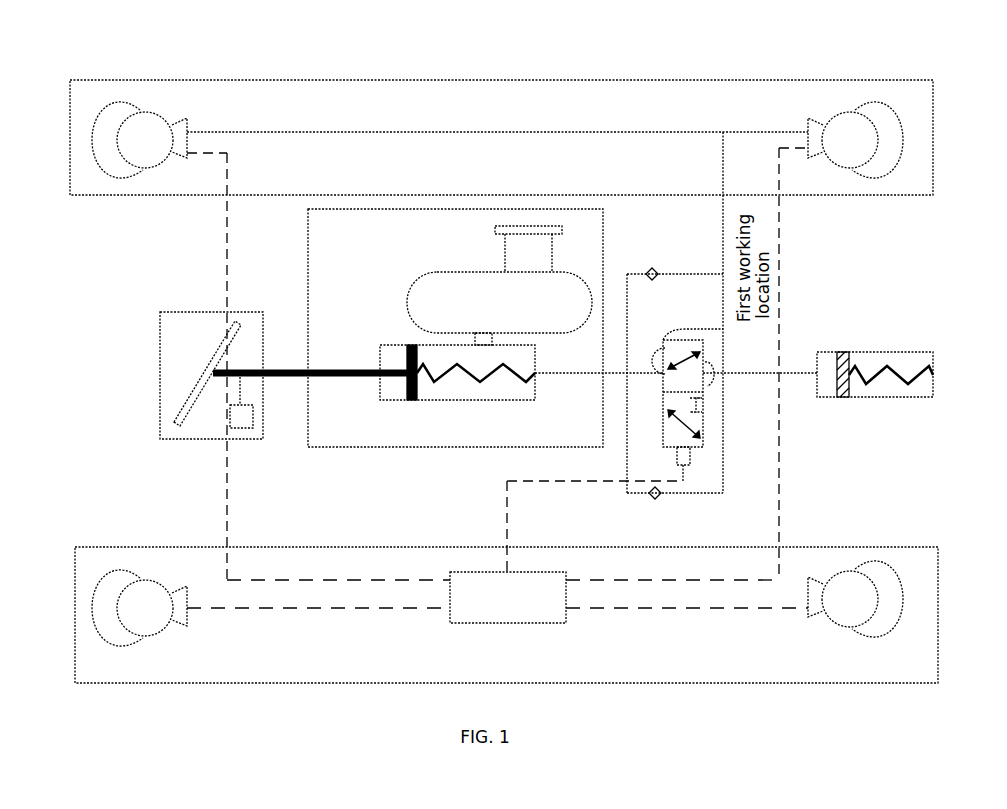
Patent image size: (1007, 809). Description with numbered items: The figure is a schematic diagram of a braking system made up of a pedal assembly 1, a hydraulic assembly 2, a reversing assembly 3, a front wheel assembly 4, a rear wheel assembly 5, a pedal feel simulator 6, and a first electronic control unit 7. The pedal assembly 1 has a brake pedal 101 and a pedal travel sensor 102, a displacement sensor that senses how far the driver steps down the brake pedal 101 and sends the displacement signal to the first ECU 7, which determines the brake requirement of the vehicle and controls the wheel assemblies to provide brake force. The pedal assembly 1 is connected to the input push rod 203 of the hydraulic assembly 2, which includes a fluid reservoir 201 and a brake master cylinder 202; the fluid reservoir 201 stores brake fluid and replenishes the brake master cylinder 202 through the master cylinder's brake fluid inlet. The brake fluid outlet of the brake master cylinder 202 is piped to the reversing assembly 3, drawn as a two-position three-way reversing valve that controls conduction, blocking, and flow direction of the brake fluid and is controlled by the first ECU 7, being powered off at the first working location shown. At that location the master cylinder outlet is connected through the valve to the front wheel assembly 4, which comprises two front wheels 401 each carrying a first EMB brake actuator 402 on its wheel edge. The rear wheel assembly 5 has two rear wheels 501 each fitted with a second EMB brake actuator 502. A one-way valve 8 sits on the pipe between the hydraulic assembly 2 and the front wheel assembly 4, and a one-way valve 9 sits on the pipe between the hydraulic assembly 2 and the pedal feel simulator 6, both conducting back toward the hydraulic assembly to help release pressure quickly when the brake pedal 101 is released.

The pedal assembly 1 is at (204, 402).
The brake pedal 101 is at (188, 420).
The pedal travel sensor 102 is at (252, 430).
The hydraulic assembly 2 is at (455, 296).
The fluid reservoir 201 is at (455, 272).
The brake master cylinder 202 is at (455, 400).
The input push rod 203 is at (353, 368).
The reversing assembly 3 is at (703, 395).
The front wheel assembly 4 is at (70, 82).
The front wheels 401 is at (143, 111).
The first EMB brake actuator 402 is at (172, 127).
The rear wheel assembly 5 is at (75, 548).
The rear wheels 501 is at (142, 637).
The second EMB brake actuator 502 is at (175, 623).
The pedal feel simulator 6 is at (875, 352).
The first electronic control unit (ECU) 7 is at (507, 623).
The one-way valve 8 is at (650, 266).
The one-way valve 9 is at (661, 498).